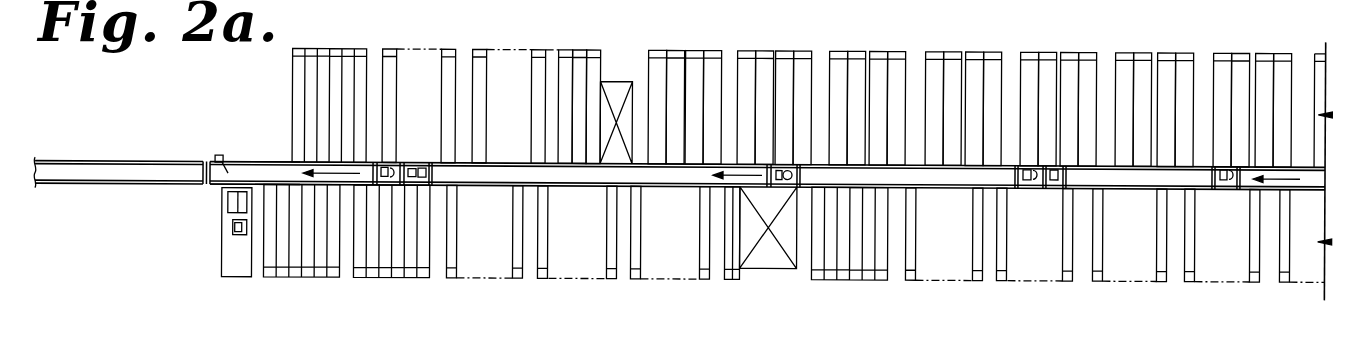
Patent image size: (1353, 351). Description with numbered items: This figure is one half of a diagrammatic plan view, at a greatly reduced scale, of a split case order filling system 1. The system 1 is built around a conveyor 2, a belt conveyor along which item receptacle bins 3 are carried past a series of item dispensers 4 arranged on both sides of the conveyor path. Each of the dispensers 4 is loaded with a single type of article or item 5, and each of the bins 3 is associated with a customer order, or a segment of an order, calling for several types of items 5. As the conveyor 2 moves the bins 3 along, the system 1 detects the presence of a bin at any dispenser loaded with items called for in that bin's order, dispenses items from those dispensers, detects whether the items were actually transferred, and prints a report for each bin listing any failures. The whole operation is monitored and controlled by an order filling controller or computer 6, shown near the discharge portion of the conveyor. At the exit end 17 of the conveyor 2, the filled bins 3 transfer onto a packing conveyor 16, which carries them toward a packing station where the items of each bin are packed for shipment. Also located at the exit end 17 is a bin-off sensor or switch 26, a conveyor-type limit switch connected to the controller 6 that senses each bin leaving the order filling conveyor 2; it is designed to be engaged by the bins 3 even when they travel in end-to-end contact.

The split case order filling system 1 is at (228, 122).
The conveyor 2 is at (1318, 178).
The item receptacle bins 3 is at (418, 164).
The item dispensers 4 is at (582, 51).
The item 5 is at (432, 174).
The order filling controller 6 is at (222, 208).
The packing conveyor 16 is at (115, 178).
The exit end 17 is at (260, 175).
The bin-off sensor 26 is at (221, 159).